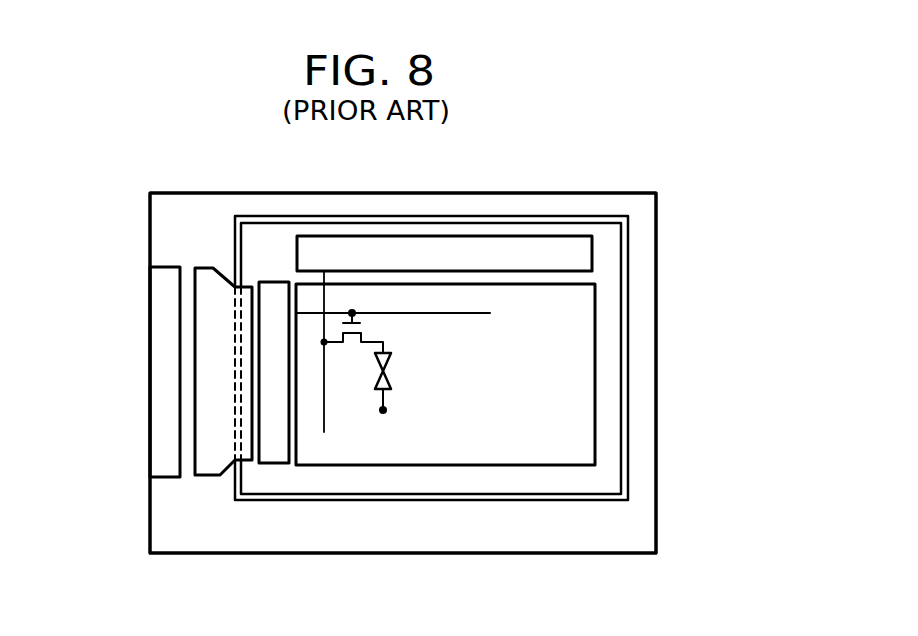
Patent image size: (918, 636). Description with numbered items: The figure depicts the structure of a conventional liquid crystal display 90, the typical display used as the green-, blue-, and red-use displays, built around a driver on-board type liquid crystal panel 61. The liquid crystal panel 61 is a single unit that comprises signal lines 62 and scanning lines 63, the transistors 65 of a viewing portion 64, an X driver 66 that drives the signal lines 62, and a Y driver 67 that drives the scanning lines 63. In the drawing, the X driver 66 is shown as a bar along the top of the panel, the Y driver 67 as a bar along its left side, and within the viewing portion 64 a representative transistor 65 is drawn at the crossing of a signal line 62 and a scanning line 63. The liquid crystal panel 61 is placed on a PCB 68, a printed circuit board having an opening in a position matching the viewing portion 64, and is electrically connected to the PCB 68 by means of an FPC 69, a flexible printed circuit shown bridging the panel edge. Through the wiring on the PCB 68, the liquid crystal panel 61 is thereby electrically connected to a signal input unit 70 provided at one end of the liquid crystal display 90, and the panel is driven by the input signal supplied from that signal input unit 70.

The liquid crystal display 90 is at (653, 181).
The driver on-board type liquid crystal panel 61 is at (613, 418).
The signal lines 62 is at (325, 420).
The scanning lines 63 is at (482, 316).
The viewing portion 64 is at (598, 472).
The transistors 65 is at (367, 332).
The X driver 66 is at (513, 248).
The Y driver 67 is at (277, 448).
The PCB (printed circuit board) 68 is at (637, 555).
The FPC (flexible printed circuit) 69 is at (218, 272).
The signal input unit 70 is at (168, 403).